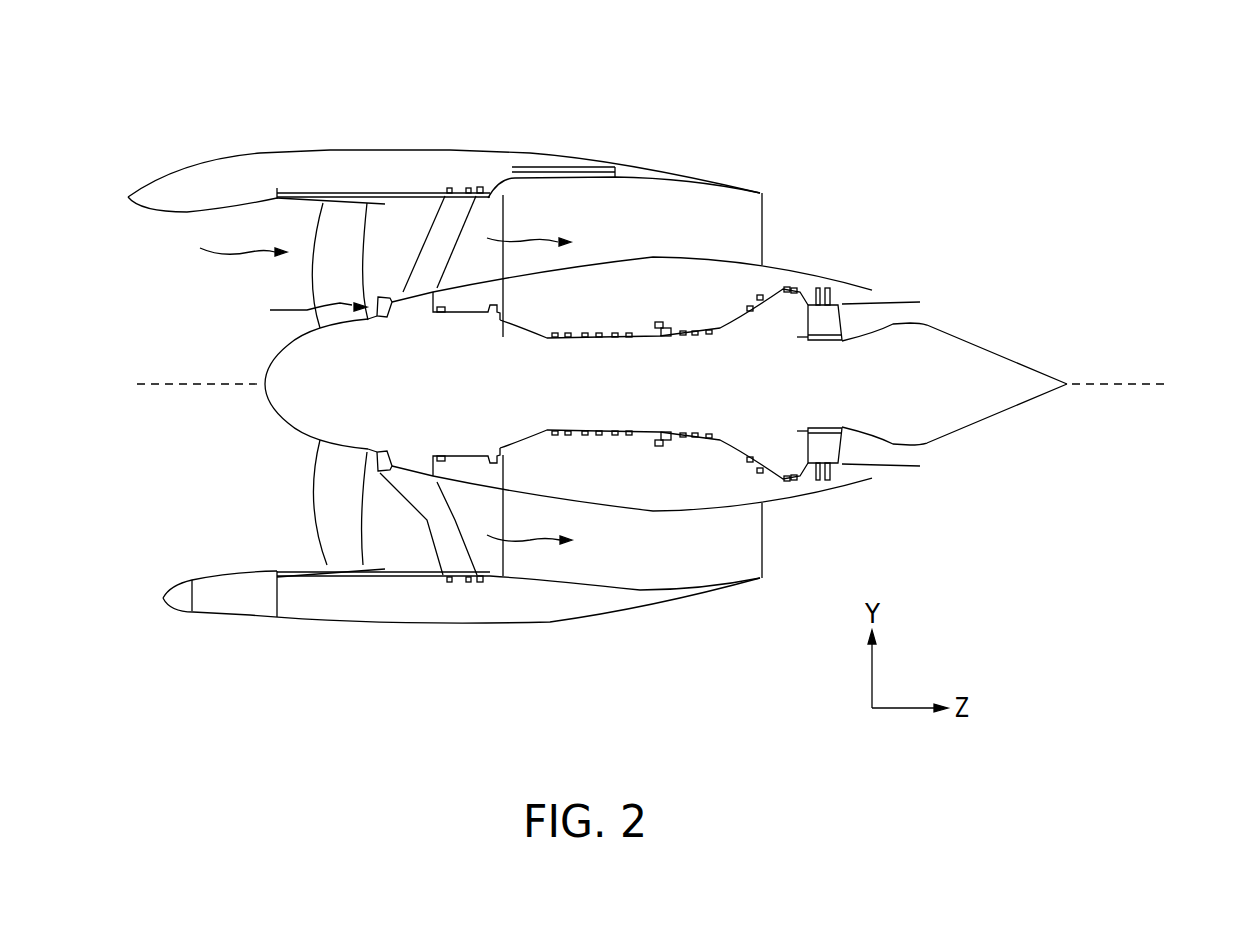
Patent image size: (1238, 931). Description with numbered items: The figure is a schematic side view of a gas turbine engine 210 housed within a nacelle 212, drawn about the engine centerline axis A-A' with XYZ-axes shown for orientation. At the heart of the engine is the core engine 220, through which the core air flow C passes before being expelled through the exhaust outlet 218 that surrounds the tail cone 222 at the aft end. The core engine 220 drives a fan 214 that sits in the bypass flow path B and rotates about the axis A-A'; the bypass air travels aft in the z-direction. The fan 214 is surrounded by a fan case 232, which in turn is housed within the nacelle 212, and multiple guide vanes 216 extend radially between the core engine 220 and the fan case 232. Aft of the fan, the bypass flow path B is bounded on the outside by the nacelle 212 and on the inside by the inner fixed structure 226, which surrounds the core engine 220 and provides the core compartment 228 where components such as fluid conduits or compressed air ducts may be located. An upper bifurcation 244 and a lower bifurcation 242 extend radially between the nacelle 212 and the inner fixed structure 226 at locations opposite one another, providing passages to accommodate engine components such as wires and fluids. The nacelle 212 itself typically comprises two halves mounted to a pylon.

The gas turbine engine 210 is at (775, 100).
The nacelle 212 is at (313, 140).
The fan 214 is at (320, 497).
The guide vanes 216 is at (438, 248).
The exhaust outlet 218 is at (918, 315).
The core engine 220 is at (645, 326).
The tail cone 222 is at (962, 418).
The inner fixed structure 226 is at (648, 250).
The core compartment 228 is at (661, 497).
The fan case 232 is at (303, 580).
The lower bifurcation 242 is at (738, 566).
The upper bifurcation 244 is at (762, 212).